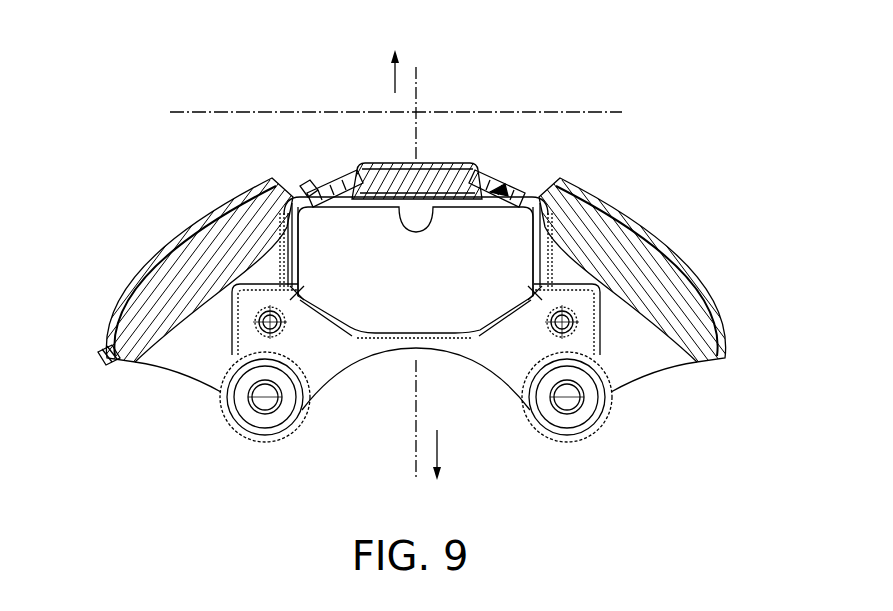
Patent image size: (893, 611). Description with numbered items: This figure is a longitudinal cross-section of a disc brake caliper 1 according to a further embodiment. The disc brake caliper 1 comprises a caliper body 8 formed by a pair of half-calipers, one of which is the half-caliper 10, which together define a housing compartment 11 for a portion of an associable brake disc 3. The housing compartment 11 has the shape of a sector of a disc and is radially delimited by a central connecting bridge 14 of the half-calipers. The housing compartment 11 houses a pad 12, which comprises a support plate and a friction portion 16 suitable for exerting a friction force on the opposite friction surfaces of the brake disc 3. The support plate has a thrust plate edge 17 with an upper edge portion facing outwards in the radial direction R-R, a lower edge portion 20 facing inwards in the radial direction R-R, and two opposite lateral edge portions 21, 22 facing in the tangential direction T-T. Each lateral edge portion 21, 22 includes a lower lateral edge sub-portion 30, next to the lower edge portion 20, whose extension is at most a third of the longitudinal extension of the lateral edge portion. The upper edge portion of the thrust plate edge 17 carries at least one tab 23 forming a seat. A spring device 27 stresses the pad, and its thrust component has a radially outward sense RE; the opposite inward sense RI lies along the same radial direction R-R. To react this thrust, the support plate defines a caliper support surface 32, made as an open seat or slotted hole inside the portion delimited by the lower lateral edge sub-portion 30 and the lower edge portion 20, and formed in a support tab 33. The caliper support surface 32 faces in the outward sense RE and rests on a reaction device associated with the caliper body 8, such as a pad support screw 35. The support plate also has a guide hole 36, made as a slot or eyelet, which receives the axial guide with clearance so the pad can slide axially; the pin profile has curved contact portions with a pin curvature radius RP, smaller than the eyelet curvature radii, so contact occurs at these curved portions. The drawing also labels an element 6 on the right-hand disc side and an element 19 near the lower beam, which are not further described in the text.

The disc brake caliper 1 is at (625, 175).
The brake disc 3 is at (128, 230).
The caliper body 6 is at (553, 280).
The caliper body 8 is at (170, 370).
The half-caliper 10 is at (627, 363).
The housing compartment 11 is at (505, 190).
The pad 12 is at (307, 183).
The central connecting bridge 14 is at (441, 176).
The friction portion 16 is at (407, 312).
The thrust plate edge 17 is at (343, 242).
The lower beam edge 19 is at (510, 336).
The lower edge portion 20 is at (463, 342).
The lateral edge portion 21 is at (548, 275).
The lateral edge portion 22 is at (280, 268).
The tab 23 is at (305, 185).
The spring device 27 is at (387, 162).
The lower lateral edge sub-portion 30 is at (212, 247).
The caliper support surface 32 is at (200, 360).
The support tab 33 is at (300, 403).
The pad support screw 35 is at (272, 400).
The guide hole 36 is at (255, 316).
The pin curvature radius RP is at (300, 291).
The outward sense RE is at (393, 82).
The inward radial direction RI is at (438, 452).
The radial direction R-R is at (418, 92).
The tangential direction T-T is at (582, 111).